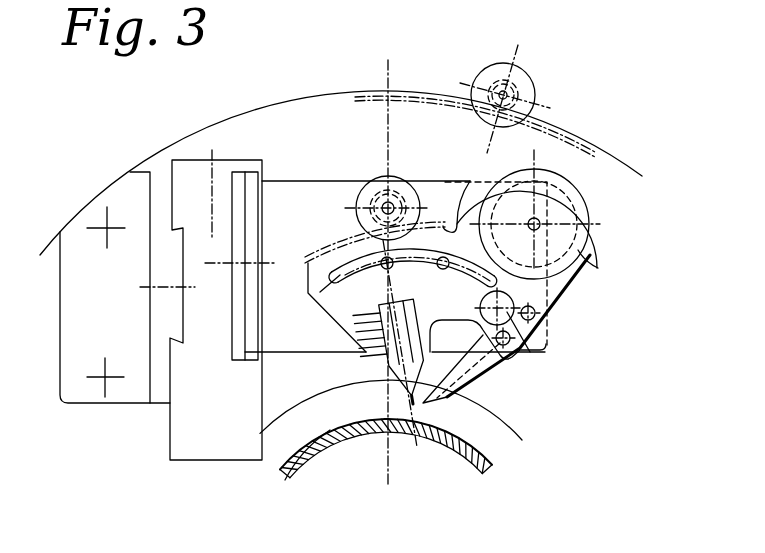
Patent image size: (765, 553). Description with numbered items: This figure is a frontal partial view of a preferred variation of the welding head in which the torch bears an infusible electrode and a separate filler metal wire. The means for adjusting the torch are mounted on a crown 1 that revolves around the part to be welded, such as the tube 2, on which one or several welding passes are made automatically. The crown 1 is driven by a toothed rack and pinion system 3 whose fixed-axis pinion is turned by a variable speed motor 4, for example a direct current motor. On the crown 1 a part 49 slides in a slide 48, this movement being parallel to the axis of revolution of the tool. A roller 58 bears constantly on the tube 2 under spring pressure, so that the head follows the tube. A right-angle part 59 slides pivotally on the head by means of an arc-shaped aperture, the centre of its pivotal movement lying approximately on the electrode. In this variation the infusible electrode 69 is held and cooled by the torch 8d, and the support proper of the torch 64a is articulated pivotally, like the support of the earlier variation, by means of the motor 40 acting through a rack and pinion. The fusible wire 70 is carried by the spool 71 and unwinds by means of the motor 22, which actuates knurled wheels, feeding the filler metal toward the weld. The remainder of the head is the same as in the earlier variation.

The crown 1 is at (327, 108).
The tube 2 is at (329, 438).
The toothed rack and pinion system 3 is at (500, 95).
The variable speed motor 4 is at (527, 82).
The torch 8d is at (392, 353).
The motor 22 is at (547, 339).
The motor 40 is at (405, 188).
The slide 48 is at (183, 300).
The part 49 is at (170, 427).
The roller 58 is at (235, 170).
The right-angle part 59 is at (315, 190).
The torch support 64a is at (337, 304).
The infusible electrode 69 is at (405, 402).
The fusible wire 70 is at (585, 258).
The spool 71 is at (574, 217).